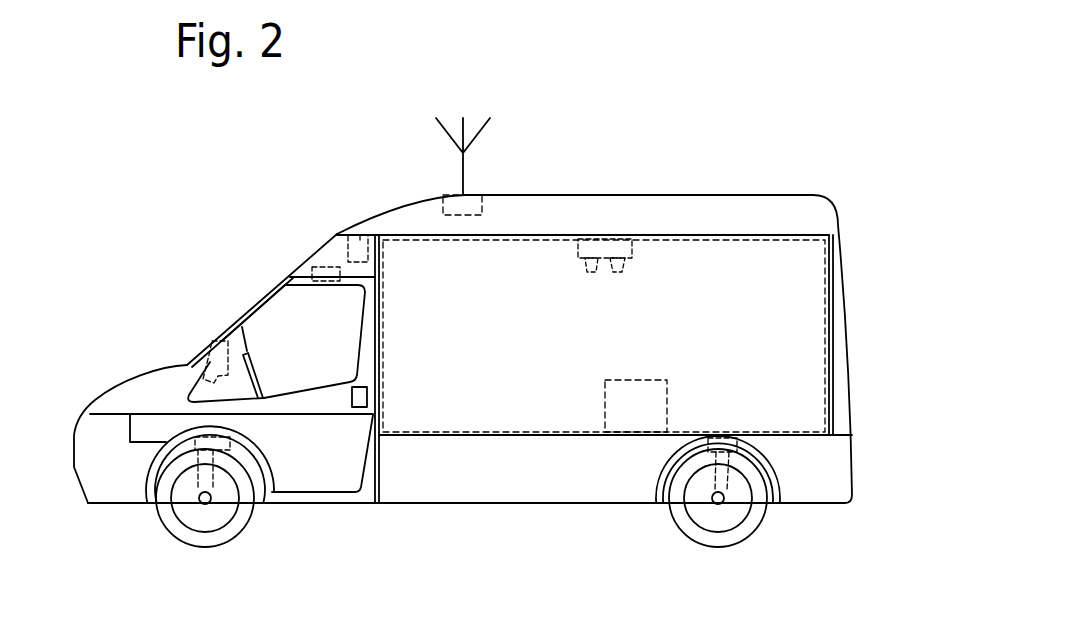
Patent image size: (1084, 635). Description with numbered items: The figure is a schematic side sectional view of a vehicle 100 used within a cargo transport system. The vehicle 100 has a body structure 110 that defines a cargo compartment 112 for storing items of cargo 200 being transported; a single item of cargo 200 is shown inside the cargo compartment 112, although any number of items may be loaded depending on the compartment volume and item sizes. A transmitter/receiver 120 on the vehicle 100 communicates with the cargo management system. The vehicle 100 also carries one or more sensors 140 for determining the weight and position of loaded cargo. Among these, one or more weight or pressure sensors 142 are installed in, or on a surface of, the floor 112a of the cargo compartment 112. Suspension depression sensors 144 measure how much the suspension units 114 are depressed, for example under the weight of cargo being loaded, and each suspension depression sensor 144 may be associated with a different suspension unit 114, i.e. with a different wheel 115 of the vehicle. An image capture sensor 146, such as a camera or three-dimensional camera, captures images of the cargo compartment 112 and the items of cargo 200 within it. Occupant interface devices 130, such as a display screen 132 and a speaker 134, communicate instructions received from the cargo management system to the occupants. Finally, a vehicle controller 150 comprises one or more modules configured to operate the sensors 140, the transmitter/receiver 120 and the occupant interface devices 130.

The vehicle 100 is at (126, 250).
The body structure 110 is at (700, 202).
The cargo compartment 112 is at (763, 238).
The floor 112a is at (777, 430).
The suspension unit 114 is at (197, 487).
The wheel 115 is at (205, 548).
The transmitter/receiver 120 is at (473, 195).
The occupant interface device 130 is at (251, 282).
The display screen 132 is at (242, 327).
The speaker 134 is at (317, 257).
The sensors 140 is at (551, 337).
The weight or pressure sensor 142 is at (458, 433).
The suspension depression sensor 144 is at (230, 443).
The image capture sensor 146 is at (608, 248).
The vehicle controller 150 is at (358, 228).
The item of cargo 200 is at (637, 425).